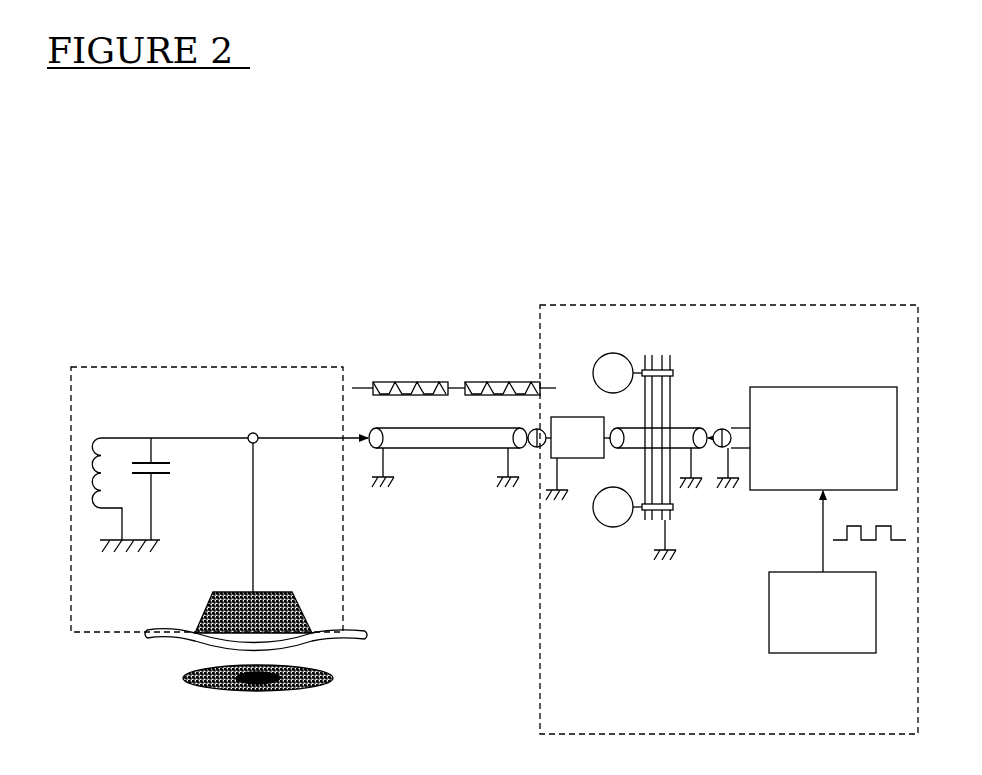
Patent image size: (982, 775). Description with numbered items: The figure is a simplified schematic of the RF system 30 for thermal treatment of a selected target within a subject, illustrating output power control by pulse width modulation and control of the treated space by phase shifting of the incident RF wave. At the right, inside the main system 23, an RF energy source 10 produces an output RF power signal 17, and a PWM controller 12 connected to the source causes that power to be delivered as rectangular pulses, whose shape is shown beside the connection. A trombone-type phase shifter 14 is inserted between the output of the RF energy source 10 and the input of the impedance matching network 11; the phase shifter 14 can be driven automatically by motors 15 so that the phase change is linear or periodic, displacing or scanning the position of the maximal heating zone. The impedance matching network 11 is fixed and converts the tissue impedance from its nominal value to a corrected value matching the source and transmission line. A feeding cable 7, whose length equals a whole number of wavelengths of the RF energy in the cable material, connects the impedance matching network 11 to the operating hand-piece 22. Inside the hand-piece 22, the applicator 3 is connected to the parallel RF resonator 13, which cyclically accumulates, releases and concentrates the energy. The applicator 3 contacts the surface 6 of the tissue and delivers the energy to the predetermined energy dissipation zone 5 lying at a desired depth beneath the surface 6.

The system 30 is at (372, 68).
The operating hand-piece 22 is at (207, 450).
The RF resonator 13 is at (230, 459).
The applicator 3 is at (263, 581).
The surface 6 is at (284, 613).
The energy dissipation zone 5 is at (248, 705).
The output RF power signal 17 is at (454, 357).
The feeding cable 7 is at (448, 493).
The main system 23 is at (729, 487).
The impedance matching network 11 is at (567, 498).
The motors 15 is at (612, 530).
The trombone-type phase shifter 14 is at (692, 436).
The RF energy source 10 is at (823, 409).
The PWM controller 12 is at (837, 602).